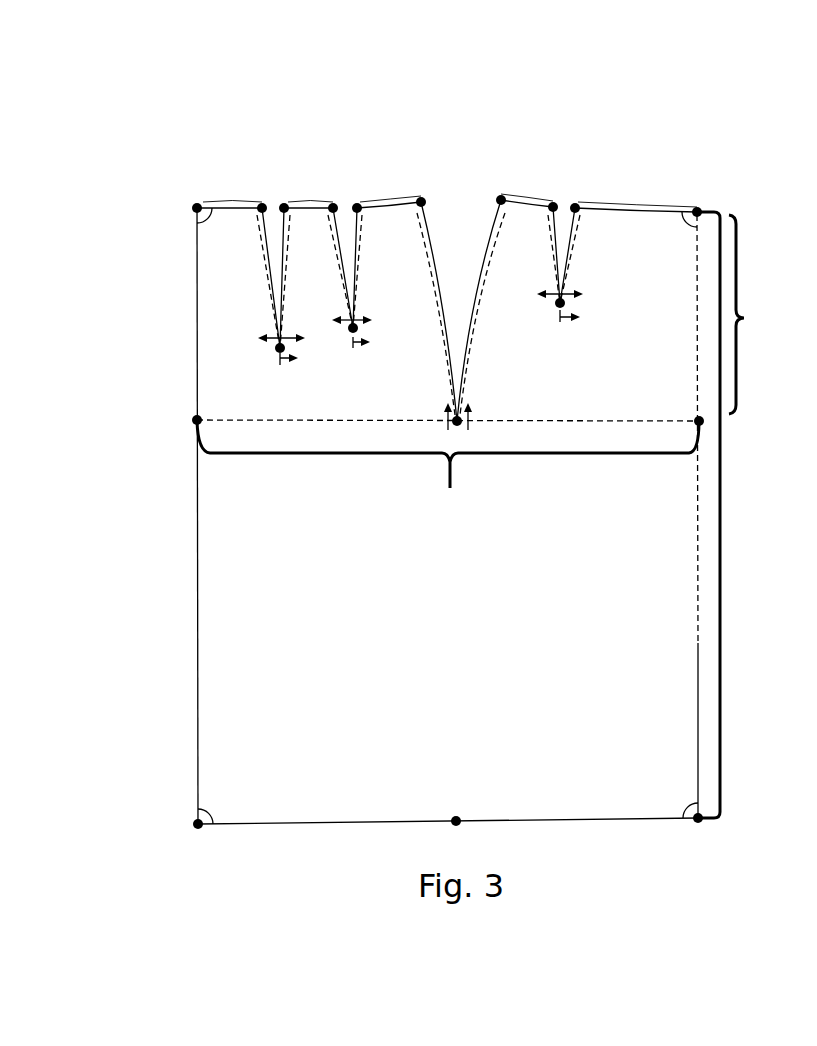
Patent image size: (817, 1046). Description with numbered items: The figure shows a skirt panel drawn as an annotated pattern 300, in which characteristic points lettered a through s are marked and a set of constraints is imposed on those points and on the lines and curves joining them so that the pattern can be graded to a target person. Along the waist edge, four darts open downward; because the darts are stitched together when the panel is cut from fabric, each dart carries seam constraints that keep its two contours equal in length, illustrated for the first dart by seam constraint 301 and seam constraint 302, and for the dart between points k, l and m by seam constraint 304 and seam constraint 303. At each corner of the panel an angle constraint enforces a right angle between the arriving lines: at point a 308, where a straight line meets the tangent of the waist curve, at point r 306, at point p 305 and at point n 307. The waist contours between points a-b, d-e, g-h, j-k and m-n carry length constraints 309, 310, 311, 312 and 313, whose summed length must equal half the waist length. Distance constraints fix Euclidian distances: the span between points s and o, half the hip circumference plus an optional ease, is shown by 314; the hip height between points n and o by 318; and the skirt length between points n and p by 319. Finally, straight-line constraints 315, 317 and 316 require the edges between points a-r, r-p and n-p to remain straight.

The annotated pattern 300 is at (703, 125).
The seam constraint 301 is at (265, 263).
The seam constraint 302 is at (283, 300).
The seam constraint 303 is at (569, 262).
The seam constraint 304 is at (569, 273).
The angle constraint at point p 305 is at (690, 811).
The angle constraint at point r 306 is at (203, 812).
The angle constraint at point n 307 is at (704, 213).
The angle constraint at point a 308 is at (195, 208).
The length constraint 309 is at (231, 202).
The length constraint 310 is at (313, 202).
The length constraint 311 is at (386, 200).
The length constraint 312 is at (530, 200).
The length constraint 313 is at (637, 204).
The distance constraint 314 is at (448, 468).
The straight-line constraint 315 is at (197, 554).
The straight-line constraint 316 is at (698, 643).
The straight-line constraint 317 is at (352, 822).
The distance constraint 318 is at (744, 318).
The distance constraint 319 is at (725, 515).